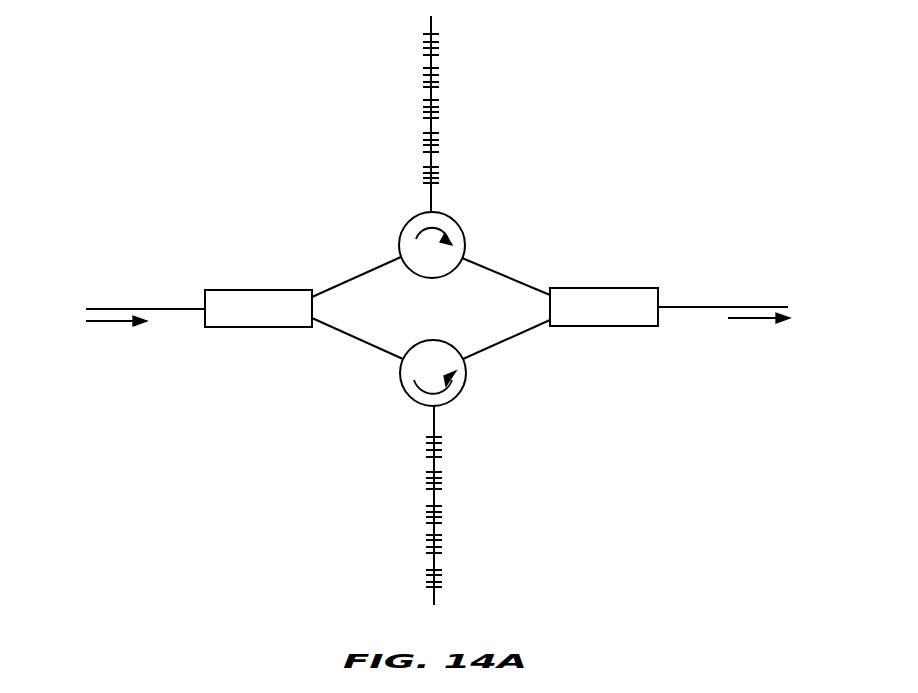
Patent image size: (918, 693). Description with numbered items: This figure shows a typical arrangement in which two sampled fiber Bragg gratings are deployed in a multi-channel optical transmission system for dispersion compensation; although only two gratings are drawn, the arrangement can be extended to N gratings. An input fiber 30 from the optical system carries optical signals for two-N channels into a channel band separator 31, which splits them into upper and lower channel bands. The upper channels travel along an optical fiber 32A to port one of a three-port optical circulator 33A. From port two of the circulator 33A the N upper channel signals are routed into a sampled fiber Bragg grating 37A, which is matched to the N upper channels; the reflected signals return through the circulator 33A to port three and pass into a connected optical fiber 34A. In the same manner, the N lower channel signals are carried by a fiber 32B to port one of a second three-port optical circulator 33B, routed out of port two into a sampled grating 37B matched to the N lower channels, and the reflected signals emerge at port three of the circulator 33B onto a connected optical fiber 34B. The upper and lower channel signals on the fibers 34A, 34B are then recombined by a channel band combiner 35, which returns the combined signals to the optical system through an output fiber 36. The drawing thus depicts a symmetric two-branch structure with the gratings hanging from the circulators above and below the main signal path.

The input fiber 30 is at (120, 309).
The channel band separator 31 is at (228, 290).
The optical fiber 32A is at (377, 260).
The fiber 32B is at (363, 348).
The three-port optical circulator 33A is at (458, 222).
The three-port optical circulator 33B is at (408, 395).
The optical fiber 34A is at (502, 265).
The optical fiber 34B is at (508, 345).
The channel band combiner 35 is at (608, 288).
The output fiber 36 is at (708, 307).
The sampled fiber Bragg grating 37A is at (453, 110).
The sampled grating 37B is at (459, 511).